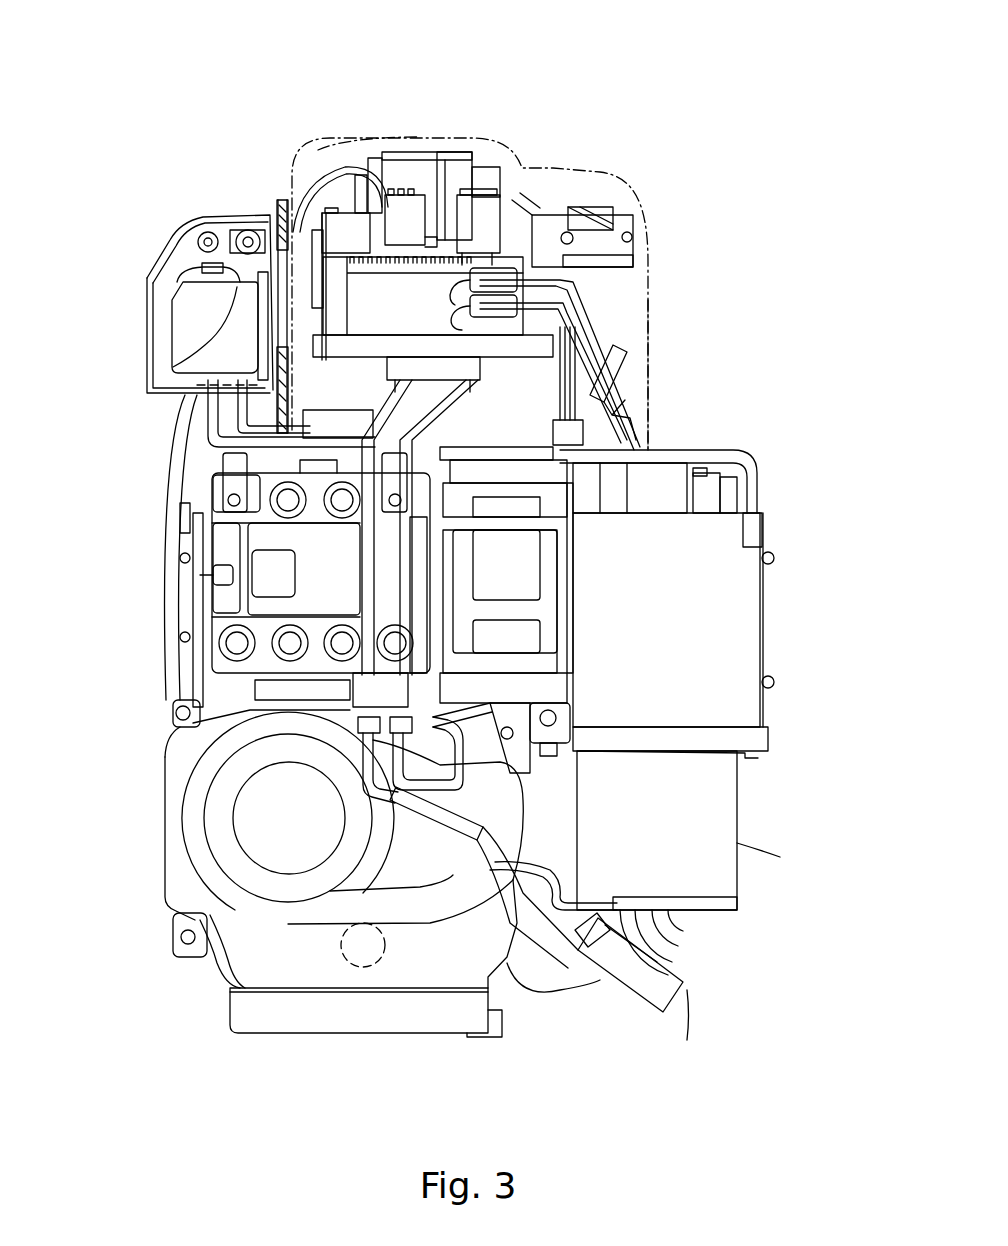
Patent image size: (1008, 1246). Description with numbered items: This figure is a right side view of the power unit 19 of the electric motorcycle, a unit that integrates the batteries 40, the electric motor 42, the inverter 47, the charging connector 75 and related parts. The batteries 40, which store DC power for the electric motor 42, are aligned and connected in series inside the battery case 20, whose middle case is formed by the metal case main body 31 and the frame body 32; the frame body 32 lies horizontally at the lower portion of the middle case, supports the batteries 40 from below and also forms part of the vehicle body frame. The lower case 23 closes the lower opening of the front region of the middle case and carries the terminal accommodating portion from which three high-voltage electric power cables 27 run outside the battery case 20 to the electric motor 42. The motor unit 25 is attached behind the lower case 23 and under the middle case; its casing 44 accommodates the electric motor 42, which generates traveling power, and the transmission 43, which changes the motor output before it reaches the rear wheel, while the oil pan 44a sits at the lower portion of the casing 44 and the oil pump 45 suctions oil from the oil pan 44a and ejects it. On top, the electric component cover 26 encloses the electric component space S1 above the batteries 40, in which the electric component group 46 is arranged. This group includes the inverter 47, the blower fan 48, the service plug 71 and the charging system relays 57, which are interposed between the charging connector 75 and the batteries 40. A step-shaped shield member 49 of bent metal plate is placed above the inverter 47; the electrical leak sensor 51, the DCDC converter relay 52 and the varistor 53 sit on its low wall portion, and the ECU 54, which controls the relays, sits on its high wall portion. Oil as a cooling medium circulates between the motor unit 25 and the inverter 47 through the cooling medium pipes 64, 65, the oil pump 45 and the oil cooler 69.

The power unit 19 is at (733, 191).
The battery case 20 is at (765, 615).
The lower case 23 is at (737, 845).
The motor unit 25 is at (221, 993).
The electric component cover 26 is at (648, 297).
The high-voltage electric power cables 27 is at (567, 983).
The case main body 31 is at (763, 585).
The frame body 32 is at (557, 684).
The batteries 40 is at (262, 542).
The electric motor 42 is at (415, 857).
The transmission 43 is at (297, 838).
The casing 44 is at (165, 880).
The oil pan 44a is at (437, 1037).
The oil pump 45 is at (363, 967).
The electric component group 46 is at (560, 141).
The inverter 47 is at (362, 297).
The blower fan 48 is at (533, 405).
The shield member 49 is at (350, 240).
The electrical leak sensor 51 is at (432, 167).
The DCDC converter relay 52 is at (386, 210).
The varistor 53 is at (462, 170).
The ECU 54 is at (350, 167).
The charging system relays 57 is at (345, 425).
The cooling medium pipe 64 is at (367, 565).
The cooling medium pipe 65 is at (403, 593).
The oil cooler 69 is at (687, 1003).
The service plug 71 is at (596, 198).
The charging connector 75 is at (190, 325).
The electric component space S1 is at (320, 147).